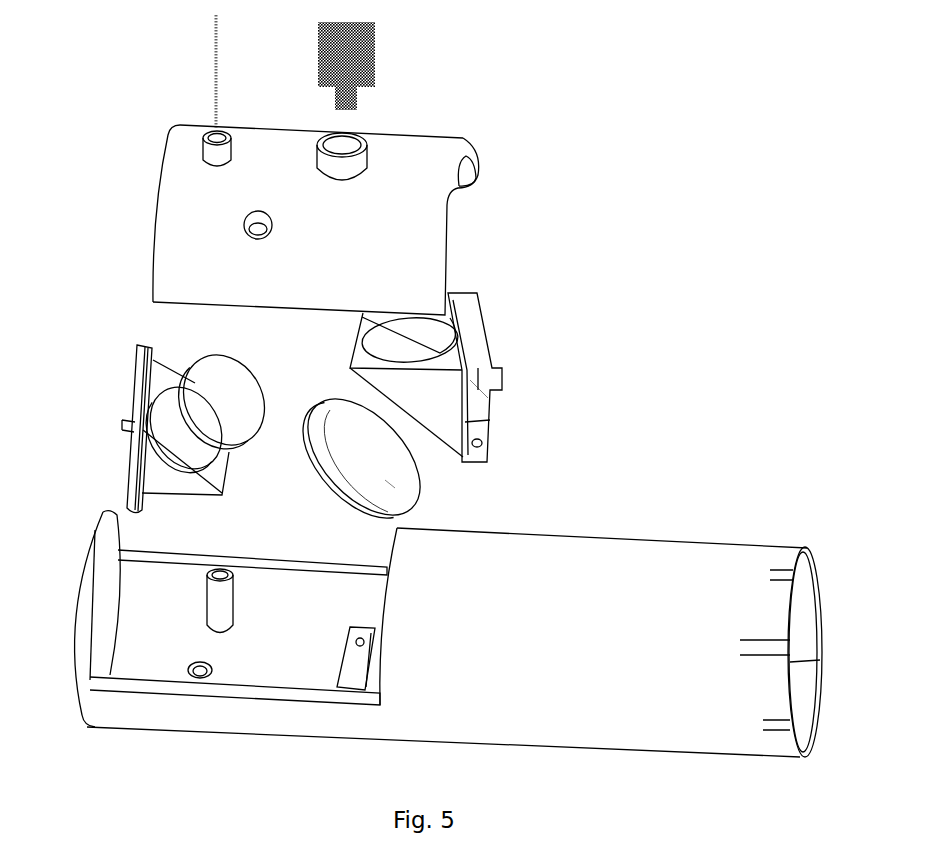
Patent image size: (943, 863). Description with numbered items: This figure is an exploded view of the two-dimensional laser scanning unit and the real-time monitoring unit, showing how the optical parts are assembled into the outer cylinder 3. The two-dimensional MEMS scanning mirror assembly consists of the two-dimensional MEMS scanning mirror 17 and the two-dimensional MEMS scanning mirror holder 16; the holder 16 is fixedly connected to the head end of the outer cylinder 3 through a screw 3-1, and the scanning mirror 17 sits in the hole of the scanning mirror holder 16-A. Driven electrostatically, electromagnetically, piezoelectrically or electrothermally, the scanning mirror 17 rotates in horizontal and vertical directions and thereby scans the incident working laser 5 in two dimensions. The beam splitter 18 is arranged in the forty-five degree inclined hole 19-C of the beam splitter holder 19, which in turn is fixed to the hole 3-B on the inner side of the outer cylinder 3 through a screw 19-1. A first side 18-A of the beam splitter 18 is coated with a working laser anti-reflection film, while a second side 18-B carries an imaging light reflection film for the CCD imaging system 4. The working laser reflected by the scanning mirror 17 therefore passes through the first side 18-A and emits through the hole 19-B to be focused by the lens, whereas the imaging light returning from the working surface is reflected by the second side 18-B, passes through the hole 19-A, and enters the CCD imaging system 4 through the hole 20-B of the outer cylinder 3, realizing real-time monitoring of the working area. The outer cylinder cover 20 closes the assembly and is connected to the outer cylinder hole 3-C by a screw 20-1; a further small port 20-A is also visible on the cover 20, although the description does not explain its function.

The outer cylinder 3 is at (454, 604).
The screw 3-1 is at (69, 585).
The hole on the inner side of the outer cylinder 3-B is at (402, 705).
The outer cylinder hole 3-C is at (241, 717).
The CCD imaging system 4 is at (370, 55).
The incident working laser 5 is at (250, 70).
The two-dimensional MEMS scanning mirror holder 16 is at (133, 429).
The hole of the scanning mirror holder 16-A is at (143, 393).
The two-dimensional MEMS scanning mirror 17 is at (183, 359).
The beam splitter 18 is at (352, 439).
The first side of the beam splitter 18-A is at (320, 465).
The second side of the beam splitter 18-B is at (346, 512).
The beam splitter holder 19 is at (461, 372).
The hole 19-A is at (442, 304).
The hole 19-B is at (543, 378).
The screw 19-1 is at (537, 455).
The 45° inclined hole 19-C is at (448, 440).
The outer cylinder cover 20 is at (354, 220).
The cover small port 20-A is at (158, 121).
The hole of the outer cylinder 20-B is at (400, 129).
The screw 20-1 is at (177, 197).